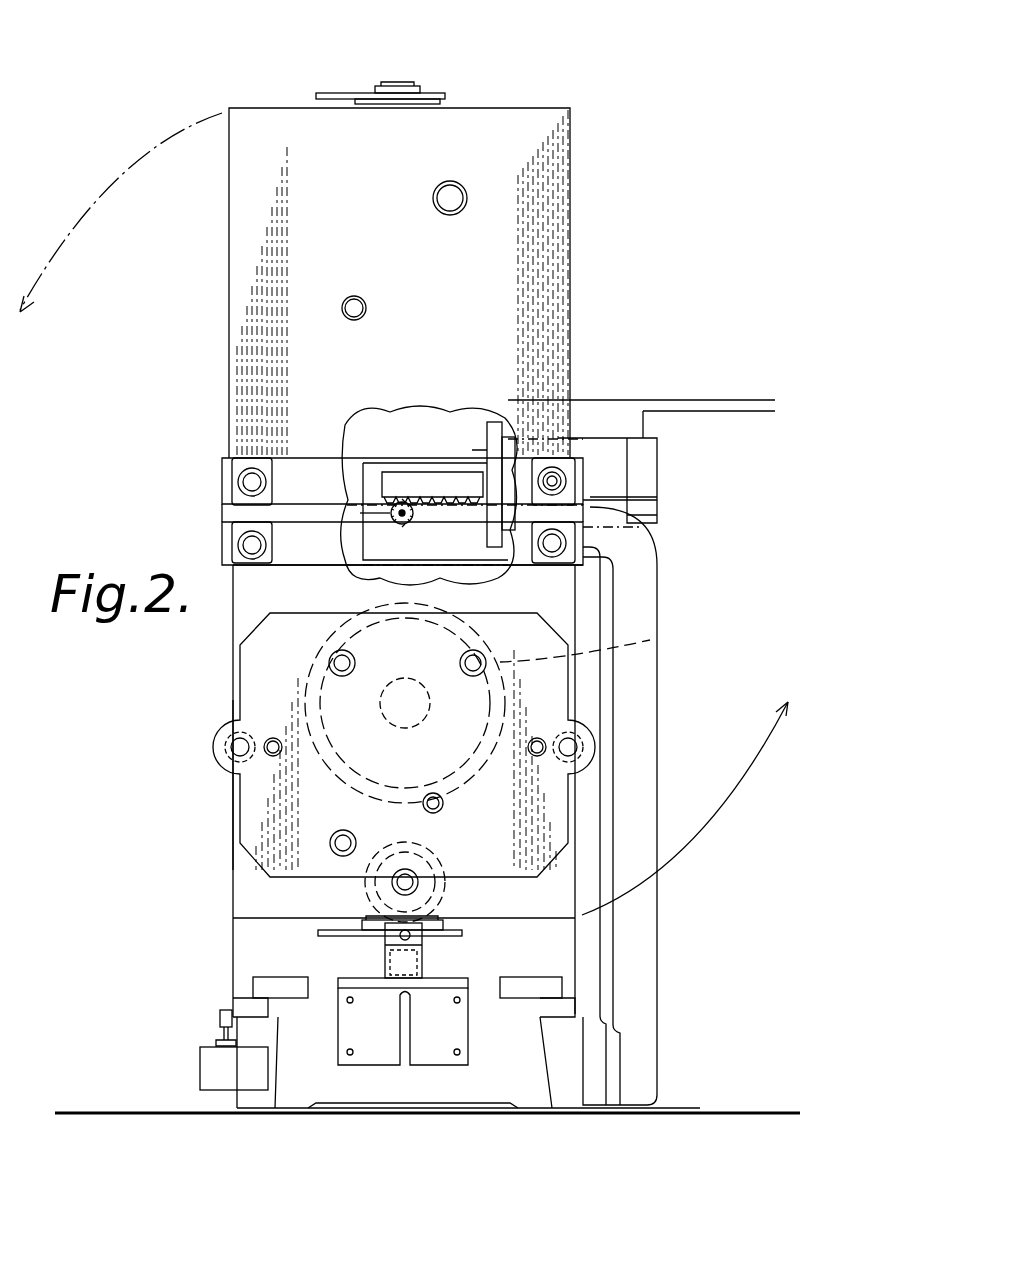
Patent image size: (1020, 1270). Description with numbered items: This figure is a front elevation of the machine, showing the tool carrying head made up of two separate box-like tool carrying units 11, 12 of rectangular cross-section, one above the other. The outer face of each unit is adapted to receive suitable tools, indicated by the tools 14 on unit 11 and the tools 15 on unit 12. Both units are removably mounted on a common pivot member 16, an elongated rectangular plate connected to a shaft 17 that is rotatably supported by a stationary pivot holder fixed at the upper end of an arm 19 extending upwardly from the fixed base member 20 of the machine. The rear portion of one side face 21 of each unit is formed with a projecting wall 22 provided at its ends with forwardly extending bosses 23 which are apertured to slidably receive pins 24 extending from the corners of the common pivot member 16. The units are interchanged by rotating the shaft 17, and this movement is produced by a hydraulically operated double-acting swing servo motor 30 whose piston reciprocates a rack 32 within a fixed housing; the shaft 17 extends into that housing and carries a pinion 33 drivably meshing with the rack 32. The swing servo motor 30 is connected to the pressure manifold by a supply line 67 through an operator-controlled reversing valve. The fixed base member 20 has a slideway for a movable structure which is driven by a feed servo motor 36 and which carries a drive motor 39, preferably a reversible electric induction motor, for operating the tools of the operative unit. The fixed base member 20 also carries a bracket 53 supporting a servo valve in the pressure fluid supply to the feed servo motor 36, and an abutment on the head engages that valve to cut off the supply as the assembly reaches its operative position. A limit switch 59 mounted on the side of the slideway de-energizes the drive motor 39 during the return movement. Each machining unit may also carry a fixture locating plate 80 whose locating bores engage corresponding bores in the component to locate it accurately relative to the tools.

The tool carrying unit 11 is at (570, 240).
The tool carrying unit 12 is at (248, 898).
The tools 14 is at (450, 205).
The tools 15 is at (305, 755).
The common pivot member 16 is at (232, 515).
The shaft 17 is at (410, 517).
The arm 19 is at (652, 600).
The fixed base member 20 is at (525, 1062).
The side face 21 is at (275, 578).
The projecting wall 22 is at (323, 472).
The bosses 23 is at (550, 470).
The pins 24 is at (250, 482).
The servo motor 30 is at (645, 472).
The rack 32 is at (440, 472).
The pinion 33 is at (392, 508).
The servo motor 36 is at (433, 860).
The drive motor 39 is at (601, 642).
The bracket 53 is at (347, 1030).
The limit switch 59 is at (220, 1017).
The supply line 67 is at (745, 400).
The plate 80 is at (270, 825).